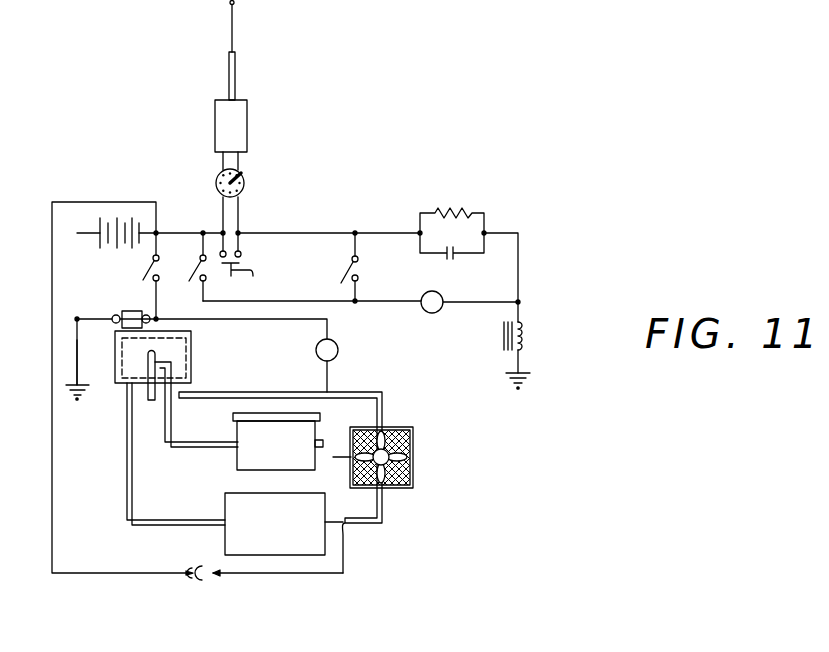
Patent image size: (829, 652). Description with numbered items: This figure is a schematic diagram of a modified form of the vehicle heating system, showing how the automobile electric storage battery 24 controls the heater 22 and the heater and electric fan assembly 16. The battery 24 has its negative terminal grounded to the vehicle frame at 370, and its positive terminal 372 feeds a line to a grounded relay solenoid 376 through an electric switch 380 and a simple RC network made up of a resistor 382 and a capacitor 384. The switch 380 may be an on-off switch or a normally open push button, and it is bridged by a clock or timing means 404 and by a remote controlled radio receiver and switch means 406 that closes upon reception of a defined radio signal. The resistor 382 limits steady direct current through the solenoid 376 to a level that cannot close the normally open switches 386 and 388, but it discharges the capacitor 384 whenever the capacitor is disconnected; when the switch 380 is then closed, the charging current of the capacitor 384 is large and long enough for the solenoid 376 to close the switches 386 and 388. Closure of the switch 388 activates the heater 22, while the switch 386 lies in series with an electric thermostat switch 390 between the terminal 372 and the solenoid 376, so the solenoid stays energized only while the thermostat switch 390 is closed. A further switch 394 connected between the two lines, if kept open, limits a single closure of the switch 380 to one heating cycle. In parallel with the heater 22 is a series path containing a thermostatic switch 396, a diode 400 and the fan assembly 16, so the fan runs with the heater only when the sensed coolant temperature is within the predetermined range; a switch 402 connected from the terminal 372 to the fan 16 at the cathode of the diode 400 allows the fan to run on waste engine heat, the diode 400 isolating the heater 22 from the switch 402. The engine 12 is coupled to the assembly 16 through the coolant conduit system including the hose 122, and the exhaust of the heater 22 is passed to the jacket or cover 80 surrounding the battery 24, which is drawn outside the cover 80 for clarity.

The remote controlled radio receiver and switch means 406 is at (236, 80).
The clock or timing means 404 is at (242, 184).
The electric switch 380 is at (248, 274).
The automobile electric storage battery 24 is at (114, 221).
The positive terminal 372 is at (156, 228).
The single pole, single throw switch 388 is at (147, 260).
The single pole, single throw switch 386 is at (190, 274).
The switch 394 is at (343, 270).
The resistor 382 is at (466, 212).
The capacitor 384 is at (460, 255).
The electric thermostat switch 390 is at (432, 313).
The relay solenoid 376 is at (522, 346).
The ground 370 is at (77, 340).
The heater 22 is at (193, 352).
The thermostatic switch 396 is at (339, 349).
The hose 122 is at (243, 392).
The cover 80 is at (254, 445).
The diode 400 is at (332, 458).
The heater and electric fan assembly 16 is at (415, 448).
The automobile engine 12 is at (322, 543).
The switch 402 is at (203, 568).